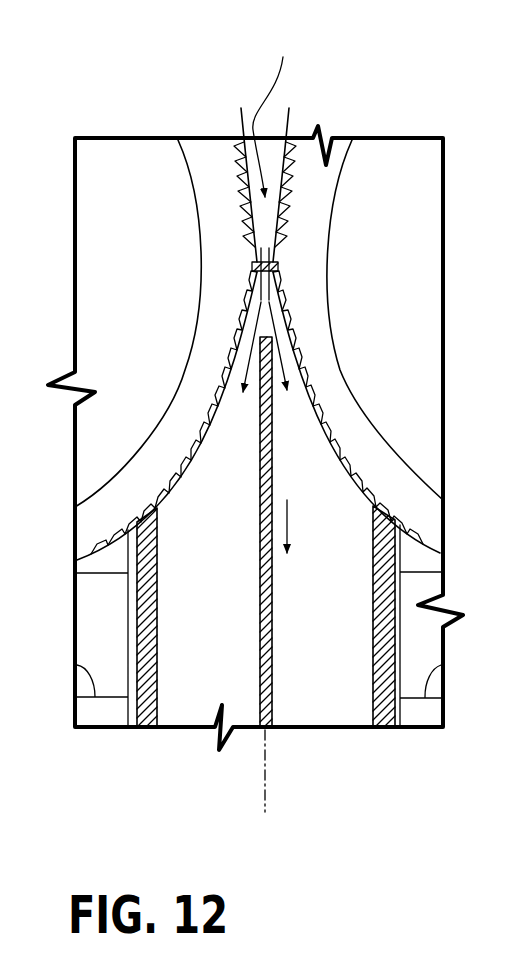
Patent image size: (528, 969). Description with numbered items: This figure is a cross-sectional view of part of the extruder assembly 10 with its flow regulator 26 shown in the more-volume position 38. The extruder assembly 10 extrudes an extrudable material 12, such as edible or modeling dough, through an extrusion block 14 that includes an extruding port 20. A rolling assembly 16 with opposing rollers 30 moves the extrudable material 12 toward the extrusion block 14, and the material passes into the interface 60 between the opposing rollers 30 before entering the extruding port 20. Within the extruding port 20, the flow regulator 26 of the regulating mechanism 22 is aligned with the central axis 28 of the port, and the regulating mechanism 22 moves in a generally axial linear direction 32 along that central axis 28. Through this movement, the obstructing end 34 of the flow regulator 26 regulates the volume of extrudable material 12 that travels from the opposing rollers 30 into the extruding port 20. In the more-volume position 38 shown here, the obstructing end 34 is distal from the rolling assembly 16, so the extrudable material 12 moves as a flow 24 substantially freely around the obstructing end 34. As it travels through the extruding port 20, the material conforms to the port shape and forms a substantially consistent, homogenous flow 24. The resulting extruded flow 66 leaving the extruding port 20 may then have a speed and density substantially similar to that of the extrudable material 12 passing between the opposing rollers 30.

The extruder assembly 10 is at (150, 90).
The extrudable material 12 is at (277, 110).
The extrusion block 14 is at (123, 752).
The rolling assembly 16 is at (370, 195).
The extruding port 20 is at (213, 698).
The regulating mechanism 22 is at (290, 663).
The flow 24 is at (290, 355).
The flow regulator 26 is at (270, 450).
The central axis 28 is at (267, 782).
The opposing rollers 30 is at (307, 390).
The linear direction 32 is at (287, 533).
The obstructing end 34 is at (264, 338).
The more-volume position 38 is at (285, 421).
The interface 60 is at (256, 250).
The extruded flow 66 is at (207, 618).